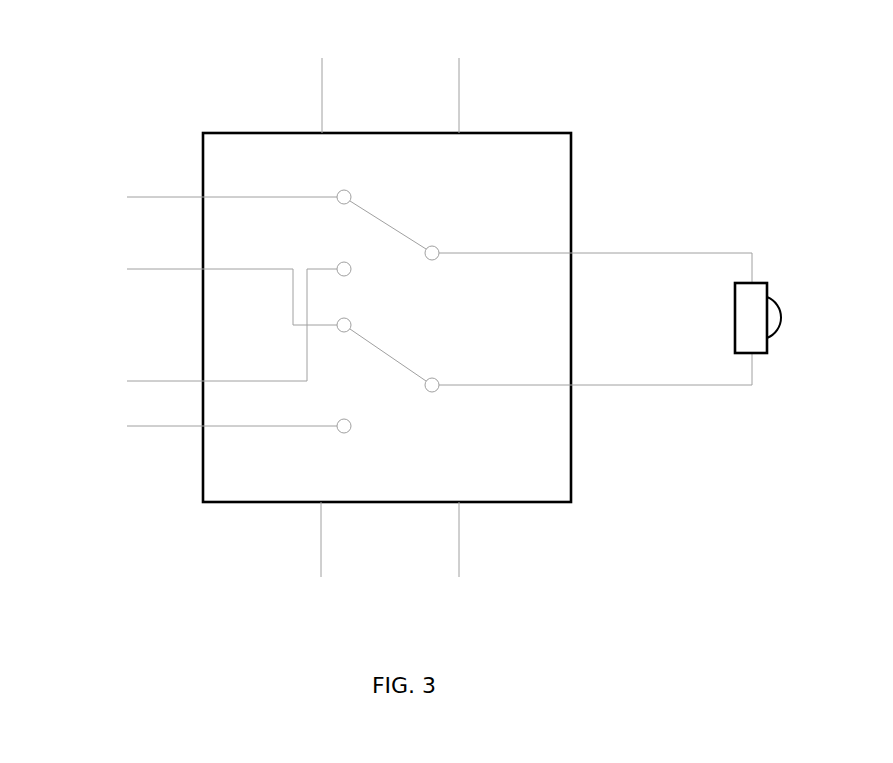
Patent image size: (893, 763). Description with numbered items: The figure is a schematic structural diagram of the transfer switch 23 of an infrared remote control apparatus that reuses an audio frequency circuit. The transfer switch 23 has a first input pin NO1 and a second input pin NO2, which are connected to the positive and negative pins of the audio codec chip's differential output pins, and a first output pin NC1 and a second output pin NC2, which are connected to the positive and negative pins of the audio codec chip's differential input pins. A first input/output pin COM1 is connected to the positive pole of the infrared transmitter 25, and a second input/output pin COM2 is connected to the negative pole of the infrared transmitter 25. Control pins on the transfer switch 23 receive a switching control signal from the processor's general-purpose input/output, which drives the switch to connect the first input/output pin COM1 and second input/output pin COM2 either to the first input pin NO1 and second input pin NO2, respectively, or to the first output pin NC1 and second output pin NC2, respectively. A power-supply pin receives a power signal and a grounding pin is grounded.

The transfer switch 23 is at (306, 313).
The infrared transmitter 25 is at (733, 320).
The first input pin NO1 is at (284, 184).
The second input pin NO2 is at (284, 256).
The first output pin NC1 is at (284, 346).
The second output pin NC2 is at (284, 413).
The first input/output pin COM1 is at (460, 230).
The second input/output pin COM2 is at (460, 360).